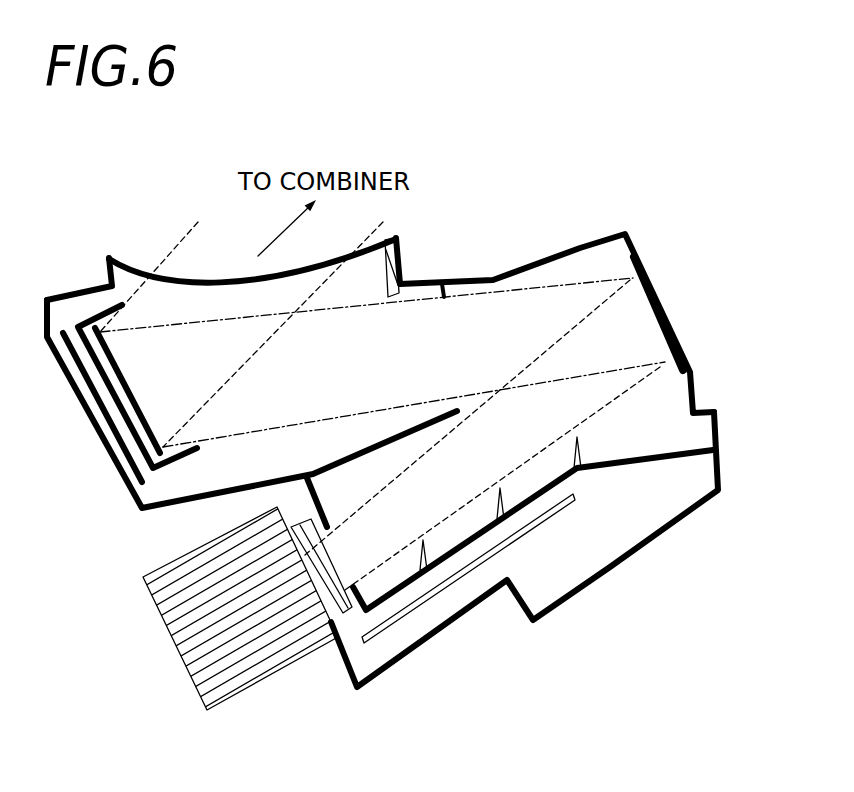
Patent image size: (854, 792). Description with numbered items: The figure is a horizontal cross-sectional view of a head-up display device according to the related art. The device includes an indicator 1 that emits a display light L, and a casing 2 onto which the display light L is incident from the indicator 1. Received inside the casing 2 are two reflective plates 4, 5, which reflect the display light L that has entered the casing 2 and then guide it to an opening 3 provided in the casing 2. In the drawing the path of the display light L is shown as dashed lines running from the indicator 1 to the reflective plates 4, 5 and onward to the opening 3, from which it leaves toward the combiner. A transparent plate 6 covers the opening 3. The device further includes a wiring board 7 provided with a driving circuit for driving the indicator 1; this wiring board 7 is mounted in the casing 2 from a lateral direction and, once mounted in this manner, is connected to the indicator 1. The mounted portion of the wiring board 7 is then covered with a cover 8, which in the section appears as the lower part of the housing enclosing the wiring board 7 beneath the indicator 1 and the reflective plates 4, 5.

The indicator 1 is at (282, 668).
The casing 2 is at (505, 268).
The opening 3 is at (372, 272).
The reflective plate 4 is at (662, 306).
The reflective plate 5 is at (137, 402).
The transparent plate 6 is at (219, 280).
The wiring board 7 is at (473, 567).
The cover 8 is at (578, 590).
The display light L is at (627, 393).